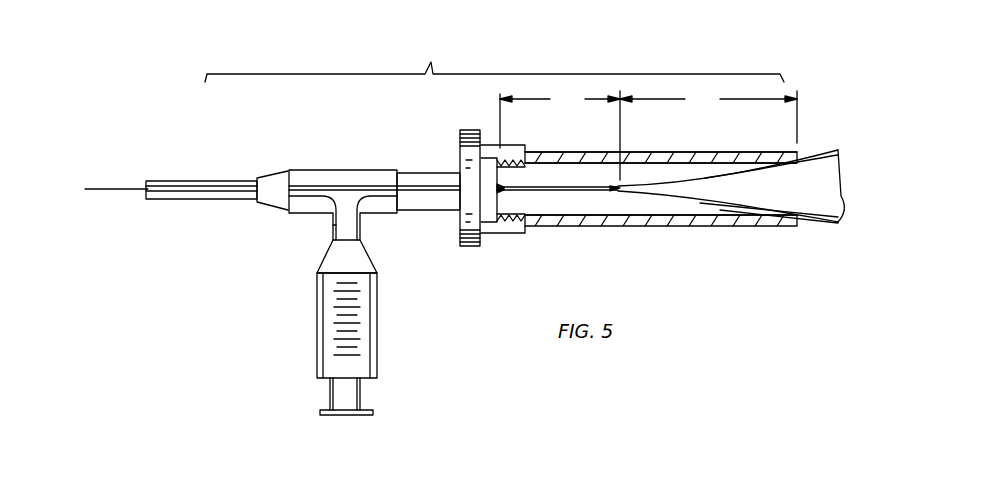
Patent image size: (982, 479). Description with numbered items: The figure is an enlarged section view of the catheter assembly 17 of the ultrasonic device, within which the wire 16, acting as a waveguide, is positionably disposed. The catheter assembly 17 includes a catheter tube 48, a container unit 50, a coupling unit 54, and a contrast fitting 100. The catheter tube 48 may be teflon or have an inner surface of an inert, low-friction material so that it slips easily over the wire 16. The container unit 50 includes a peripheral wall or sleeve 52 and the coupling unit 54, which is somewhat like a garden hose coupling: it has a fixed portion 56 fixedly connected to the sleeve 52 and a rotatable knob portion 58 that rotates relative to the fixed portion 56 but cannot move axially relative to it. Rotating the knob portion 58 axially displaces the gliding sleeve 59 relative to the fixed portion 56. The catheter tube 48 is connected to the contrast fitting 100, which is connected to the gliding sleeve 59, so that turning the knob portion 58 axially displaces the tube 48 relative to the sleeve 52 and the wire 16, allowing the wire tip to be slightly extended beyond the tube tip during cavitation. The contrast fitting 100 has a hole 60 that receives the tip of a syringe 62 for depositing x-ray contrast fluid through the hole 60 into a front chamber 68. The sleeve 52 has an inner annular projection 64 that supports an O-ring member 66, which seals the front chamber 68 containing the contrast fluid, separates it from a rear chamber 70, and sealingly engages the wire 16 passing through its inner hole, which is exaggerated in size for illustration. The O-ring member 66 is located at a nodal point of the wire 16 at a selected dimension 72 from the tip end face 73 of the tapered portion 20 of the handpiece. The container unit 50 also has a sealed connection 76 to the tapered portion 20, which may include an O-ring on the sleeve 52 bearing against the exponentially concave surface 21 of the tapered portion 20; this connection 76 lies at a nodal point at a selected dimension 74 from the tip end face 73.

The wire 16 is at (122, 191).
The catheter tube 48 is at (221, 172).
The contrast fitting 100 is at (343, 168).
The front chamber 68 is at (368, 184).
The hole 60 is at (342, 222).
The syringe 62 is at (318, 345).
The gliding sleeve 59 is at (430, 213).
The knob portion 58 is at (472, 130).
The coupling unit 54 is at (473, 265).
The fixed portion 56 is at (498, 222).
The inner annular projection 64 is at (499, 186).
The O-ring member 66 is at (499, 184).
The sleeve 52 is at (728, 152).
The container unit 50 is at (660, 152).
The rear chamber 70 is at (582, 178).
The tip end face 73 is at (616, 192).
The tapered portion 20 is at (800, 196).
The surface 21 is at (717, 206).
The sealed connection 76 is at (795, 157).
The catheter assembly 17 is at (494, 63).
The dimension 72 is at (560, 134).
The dimension 74 is at (708, 116).